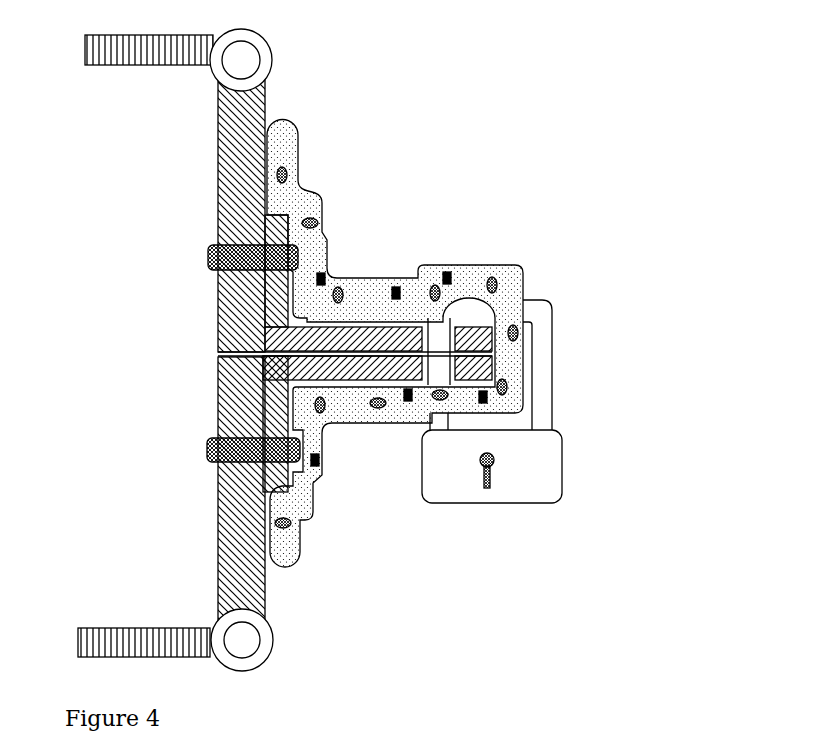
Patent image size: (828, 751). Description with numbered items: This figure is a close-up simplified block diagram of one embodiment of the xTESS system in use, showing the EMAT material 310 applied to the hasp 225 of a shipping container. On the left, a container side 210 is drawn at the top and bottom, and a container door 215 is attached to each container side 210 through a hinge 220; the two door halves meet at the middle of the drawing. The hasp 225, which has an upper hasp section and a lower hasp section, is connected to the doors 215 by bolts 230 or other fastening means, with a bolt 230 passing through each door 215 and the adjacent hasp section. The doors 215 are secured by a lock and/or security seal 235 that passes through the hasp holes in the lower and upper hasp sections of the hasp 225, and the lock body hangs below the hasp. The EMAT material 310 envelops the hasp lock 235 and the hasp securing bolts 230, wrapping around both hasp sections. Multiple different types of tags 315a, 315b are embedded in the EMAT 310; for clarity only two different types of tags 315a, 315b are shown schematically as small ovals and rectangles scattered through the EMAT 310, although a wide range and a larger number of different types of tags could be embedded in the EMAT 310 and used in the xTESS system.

The container side 210 is at (158, 68).
The container door 215 is at (217, 208).
The hinge 220 is at (280, 55).
The hasp 225 is at (360, 557).
The bolt 230 is at (205, 267).
The lock and/or security seal 235 is at (538, 507).
The EMAT material 310 is at (468, 275).
The tag 315a is at (512, 281).
The tag 315b is at (408, 405).